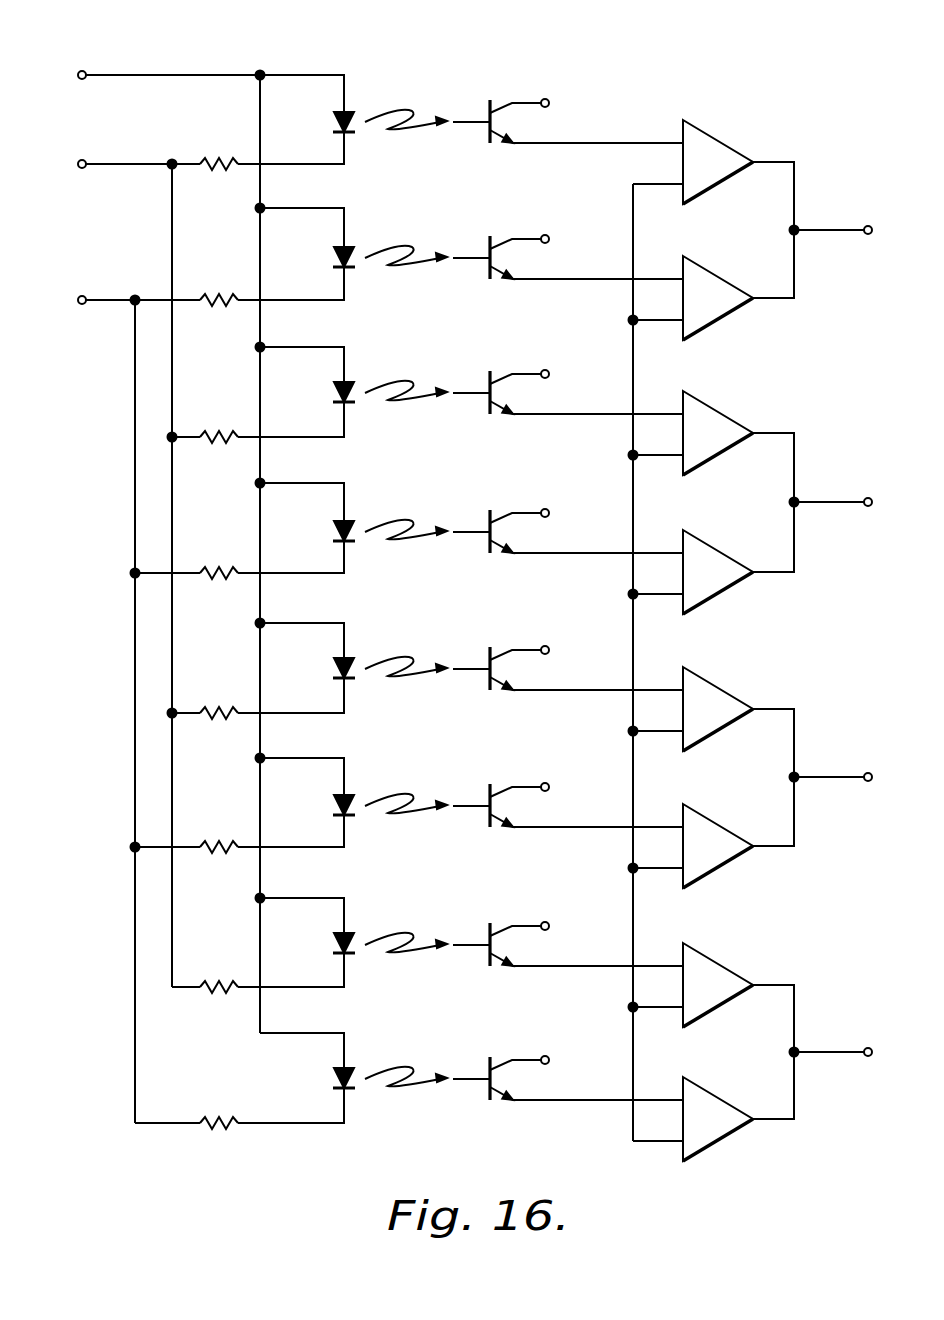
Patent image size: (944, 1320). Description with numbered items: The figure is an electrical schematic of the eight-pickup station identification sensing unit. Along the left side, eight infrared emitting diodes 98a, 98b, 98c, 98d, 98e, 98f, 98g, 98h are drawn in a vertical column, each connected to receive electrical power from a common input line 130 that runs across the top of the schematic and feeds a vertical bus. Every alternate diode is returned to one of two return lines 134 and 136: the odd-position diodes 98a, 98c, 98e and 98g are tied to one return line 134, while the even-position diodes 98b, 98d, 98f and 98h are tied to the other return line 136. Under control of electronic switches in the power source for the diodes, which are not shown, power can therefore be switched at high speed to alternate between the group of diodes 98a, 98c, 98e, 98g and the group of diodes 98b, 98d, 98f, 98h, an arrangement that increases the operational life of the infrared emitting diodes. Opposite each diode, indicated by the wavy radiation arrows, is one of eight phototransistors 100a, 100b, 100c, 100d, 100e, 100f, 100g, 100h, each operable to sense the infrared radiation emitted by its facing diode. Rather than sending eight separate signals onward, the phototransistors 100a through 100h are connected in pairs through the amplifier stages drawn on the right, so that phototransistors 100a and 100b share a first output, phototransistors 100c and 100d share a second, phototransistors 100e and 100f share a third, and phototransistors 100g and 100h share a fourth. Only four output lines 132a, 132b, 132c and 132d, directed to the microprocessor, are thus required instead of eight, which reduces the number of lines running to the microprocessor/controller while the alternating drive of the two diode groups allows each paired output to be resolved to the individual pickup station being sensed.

The input line 130 is at (158, 75).
The return line 134 is at (172, 222).
The return line 136 is at (135, 382).
The infrared emitting diode 98a is at (334, 117).
The infrared emitting diode 98b is at (334, 252).
The infrared emitting diode 98c is at (334, 387).
The infrared emitting diode 98d is at (334, 526).
The infrared emitting diode 98e is at (334, 663).
The infrared emitting diode 98f is at (334, 800).
The infrared emitting diode 98g is at (334, 938).
The infrared emitting diode 98h is at (334, 1073).
The phototransistor 100a is at (489, 114).
The phototransistor 100b is at (489, 250).
The phototransistor 100c is at (489, 385).
The phototransistor 100d is at (489, 524).
The phototransistor 100e is at (489, 661).
The phototransistor 100f is at (489, 798).
The phototransistor 100g is at (489, 937).
The phototransistor 100h is at (489, 1071).
The output line 132a is at (831, 230).
The output line 132b is at (831, 502).
The output line 132c is at (831, 777).
The output line 132d is at (831, 1052).